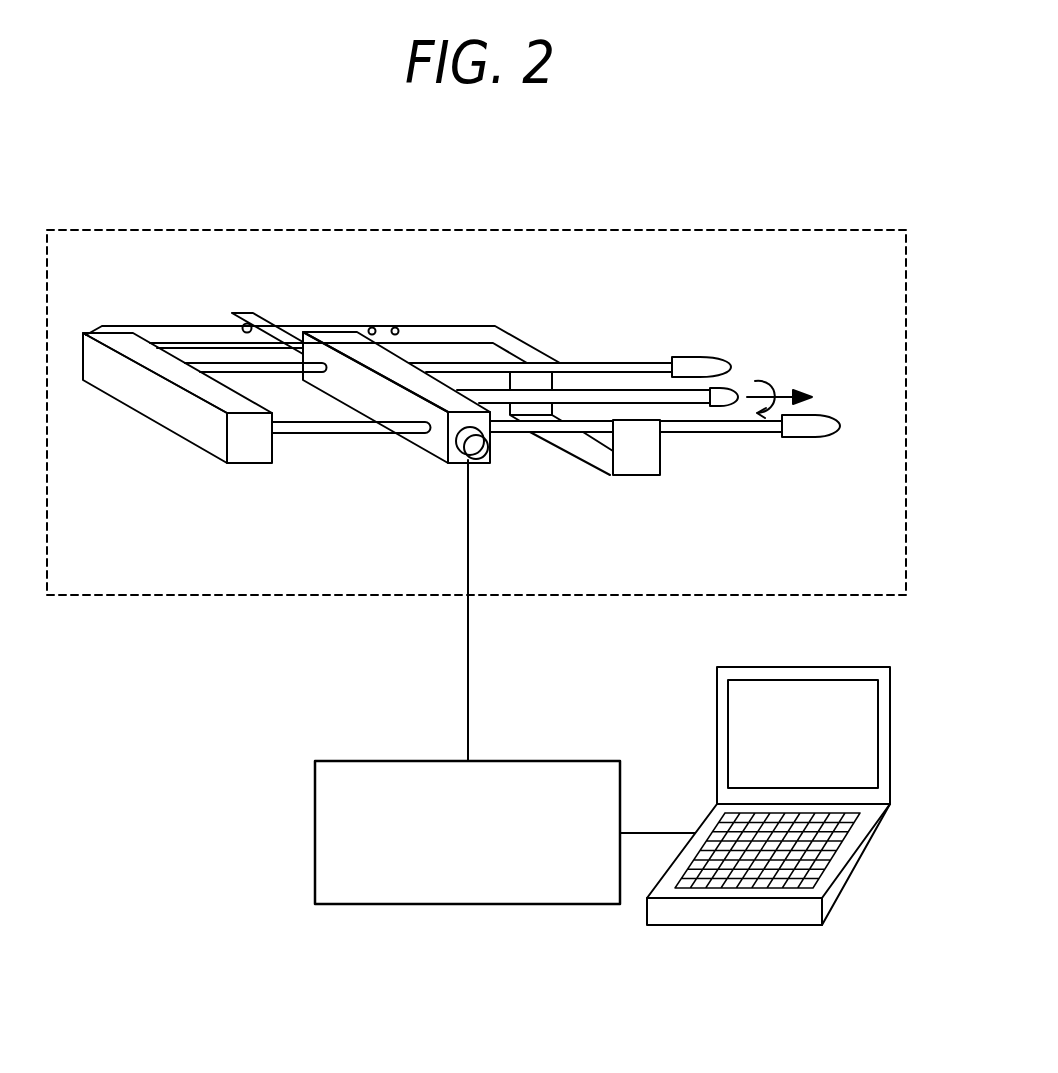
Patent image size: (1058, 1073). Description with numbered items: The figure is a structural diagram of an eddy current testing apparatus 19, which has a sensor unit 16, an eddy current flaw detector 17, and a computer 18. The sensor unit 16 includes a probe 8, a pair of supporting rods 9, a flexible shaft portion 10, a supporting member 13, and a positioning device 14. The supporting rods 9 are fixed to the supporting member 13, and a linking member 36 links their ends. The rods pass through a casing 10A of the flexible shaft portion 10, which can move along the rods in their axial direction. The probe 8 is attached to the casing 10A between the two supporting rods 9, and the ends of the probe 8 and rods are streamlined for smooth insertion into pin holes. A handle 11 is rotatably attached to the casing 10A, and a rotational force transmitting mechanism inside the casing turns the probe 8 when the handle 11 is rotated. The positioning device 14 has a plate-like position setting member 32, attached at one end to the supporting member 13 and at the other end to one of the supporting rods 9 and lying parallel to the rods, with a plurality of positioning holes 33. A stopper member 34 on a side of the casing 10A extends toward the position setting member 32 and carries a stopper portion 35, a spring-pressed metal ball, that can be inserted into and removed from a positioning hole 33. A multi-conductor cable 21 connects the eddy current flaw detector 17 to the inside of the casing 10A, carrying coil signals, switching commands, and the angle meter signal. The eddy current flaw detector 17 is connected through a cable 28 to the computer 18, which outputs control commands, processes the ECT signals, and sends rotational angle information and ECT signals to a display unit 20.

The probe 8 is at (622, 388).
The supporting rods 9 is at (480, 358).
The flexible shaft portion 10 is at (390, 410).
The casing 10A is at (332, 340).
The handle 11 is at (462, 453).
The supporting member 13 is at (162, 417).
The positioning device 14 is at (323, 307).
The sensor unit 16 is at (272, 597).
The eddy current flaw detector 17 is at (545, 761).
The computer 18 is at (803, 796).
The eddy current testing apparatus 19 is at (476, 409).
The display unit 20 is at (867, 733).
The multi-conductor cable 21 is at (468, 660).
The cable 28 is at (660, 833).
The position setting member 32 is at (197, 330).
The positioning holes 33 is at (372, 327).
The stopper member 34 is at (245, 323).
The stopper portion 35 is at (220, 327).
The linking member 36 is at (653, 452).